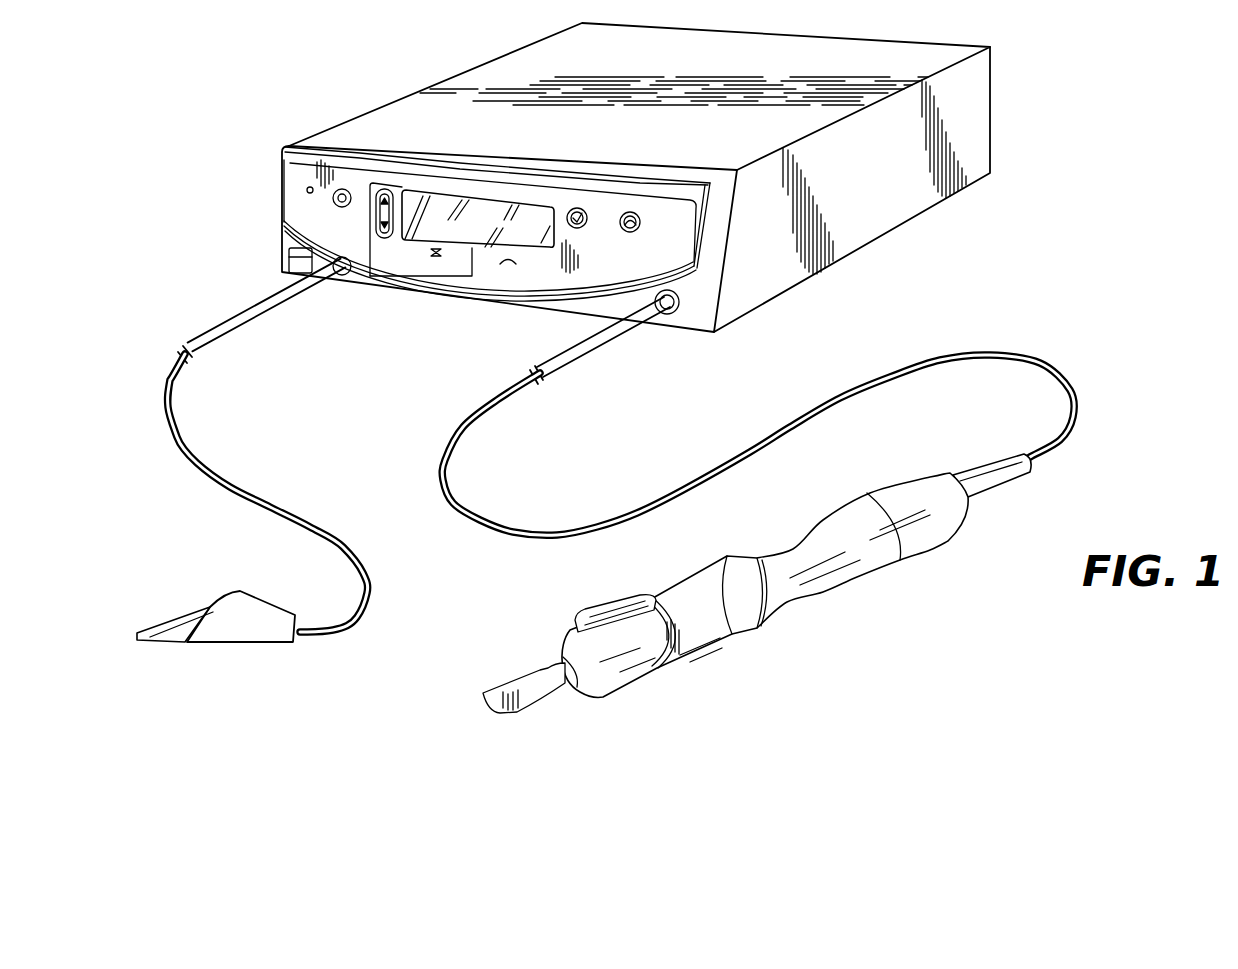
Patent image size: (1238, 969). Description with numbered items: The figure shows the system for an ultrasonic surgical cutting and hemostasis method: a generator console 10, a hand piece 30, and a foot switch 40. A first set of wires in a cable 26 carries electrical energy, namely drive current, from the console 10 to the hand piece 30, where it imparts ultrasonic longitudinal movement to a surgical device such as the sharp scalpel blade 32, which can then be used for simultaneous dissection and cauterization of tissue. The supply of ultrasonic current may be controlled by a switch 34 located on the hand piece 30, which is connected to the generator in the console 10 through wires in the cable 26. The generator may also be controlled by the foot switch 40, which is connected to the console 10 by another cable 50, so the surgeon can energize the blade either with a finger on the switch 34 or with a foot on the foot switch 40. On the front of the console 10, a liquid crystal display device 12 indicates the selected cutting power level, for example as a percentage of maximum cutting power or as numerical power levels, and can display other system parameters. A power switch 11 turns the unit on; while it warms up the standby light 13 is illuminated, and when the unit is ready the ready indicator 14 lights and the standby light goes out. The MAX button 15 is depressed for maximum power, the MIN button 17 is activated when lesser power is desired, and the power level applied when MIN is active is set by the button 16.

The console 10 is at (758, 266).
The power switch 11 is at (288, 262).
The liquid crystal display device 12 is at (428, 212).
The standby light 13 is at (341, 189).
The ready indicator 14 is at (305, 189).
The MAX button 15 is at (507, 278).
The button 16 is at (372, 236).
The MIN button 17 is at (433, 270).
The cable 26 is at (573, 358).
The hand piece 30 is at (918, 540).
The scalpel blade 32 is at (520, 677).
The switch 34 is at (608, 612).
The foot switch 40 is at (215, 607).
The cable 50 is at (207, 467).